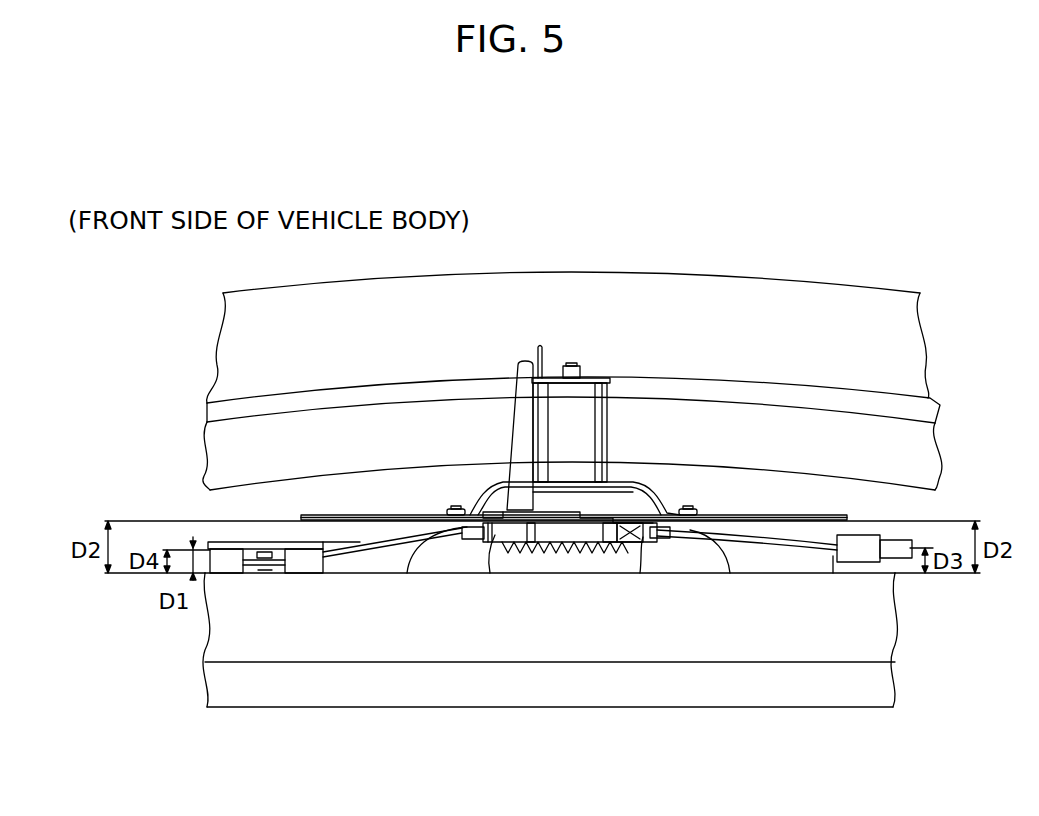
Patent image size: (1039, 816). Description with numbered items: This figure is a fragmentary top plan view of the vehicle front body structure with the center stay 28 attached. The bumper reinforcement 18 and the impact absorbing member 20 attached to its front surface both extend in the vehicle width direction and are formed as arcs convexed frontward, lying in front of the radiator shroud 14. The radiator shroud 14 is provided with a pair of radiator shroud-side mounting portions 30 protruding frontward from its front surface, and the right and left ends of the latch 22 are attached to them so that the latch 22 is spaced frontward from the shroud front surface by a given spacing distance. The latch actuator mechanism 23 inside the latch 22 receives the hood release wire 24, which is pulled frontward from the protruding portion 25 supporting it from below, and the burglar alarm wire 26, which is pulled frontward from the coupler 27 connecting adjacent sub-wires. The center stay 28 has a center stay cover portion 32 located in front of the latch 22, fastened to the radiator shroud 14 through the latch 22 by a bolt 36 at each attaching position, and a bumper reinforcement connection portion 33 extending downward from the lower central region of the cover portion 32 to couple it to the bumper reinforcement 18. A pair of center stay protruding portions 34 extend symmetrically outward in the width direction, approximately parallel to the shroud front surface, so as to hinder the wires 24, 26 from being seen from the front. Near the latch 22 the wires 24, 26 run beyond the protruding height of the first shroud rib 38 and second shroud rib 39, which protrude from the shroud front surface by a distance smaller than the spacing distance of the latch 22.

The radiator shroud 14 is at (885, 628).
The bumper reinforcement 18 is at (890, 393).
The impact absorbing member 20 is at (762, 280).
The latch 22 is at (645, 560).
The latch actuator mechanism 23 is at (566, 558).
The hood release wire 24 is at (347, 560).
The protruding portion 25 is at (262, 570).
The burglar alarm wire 26 is at (785, 552).
The coupler 27 is at (845, 562).
The center stay 28 is at (632, 477).
The radiator shroud-side mounting portions 30 is at (687, 555).
The center stay cover portion 32 is at (618, 473).
The bumper reinforcement connection portion 33 is at (558, 402).
The center stay protruding portions 34 is at (350, 515).
The bolt 36 is at (455, 509).
The first shroud rib 38 is at (227, 563).
The second shroud rib 39 is at (833, 562).